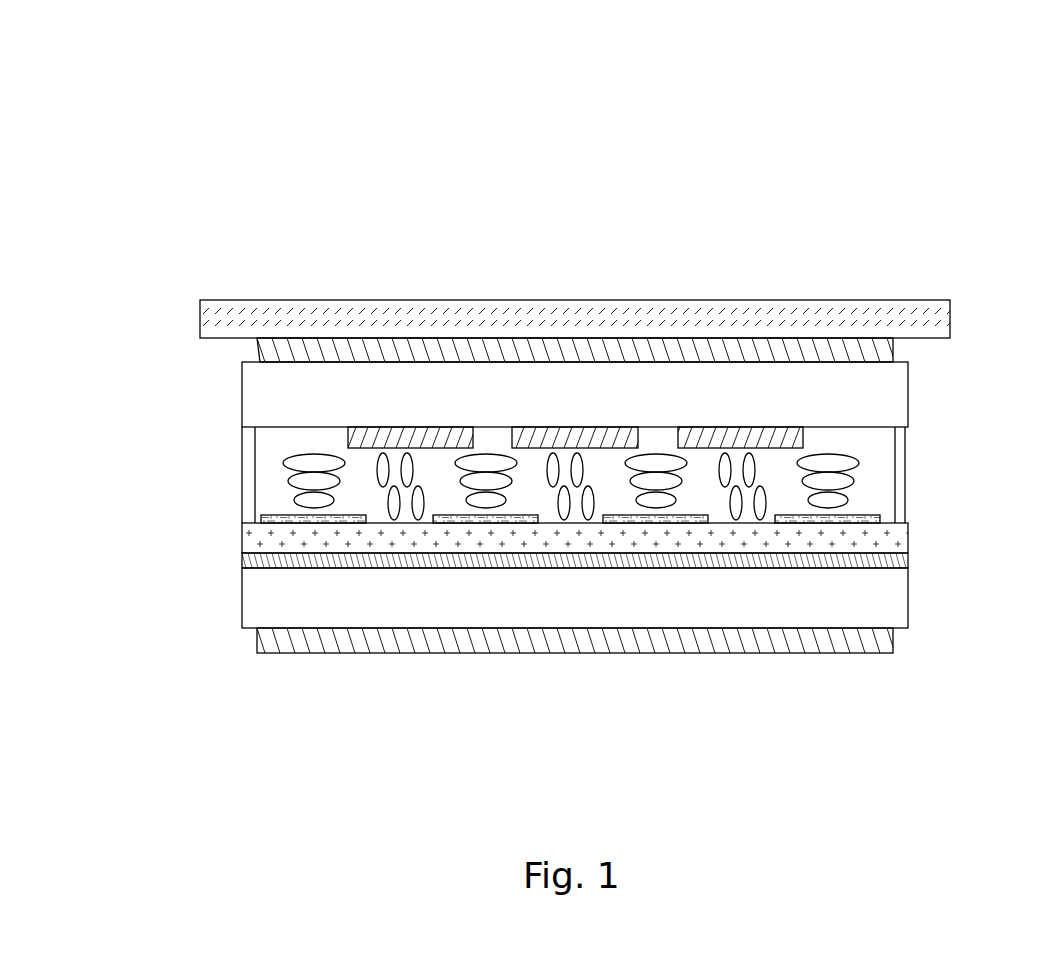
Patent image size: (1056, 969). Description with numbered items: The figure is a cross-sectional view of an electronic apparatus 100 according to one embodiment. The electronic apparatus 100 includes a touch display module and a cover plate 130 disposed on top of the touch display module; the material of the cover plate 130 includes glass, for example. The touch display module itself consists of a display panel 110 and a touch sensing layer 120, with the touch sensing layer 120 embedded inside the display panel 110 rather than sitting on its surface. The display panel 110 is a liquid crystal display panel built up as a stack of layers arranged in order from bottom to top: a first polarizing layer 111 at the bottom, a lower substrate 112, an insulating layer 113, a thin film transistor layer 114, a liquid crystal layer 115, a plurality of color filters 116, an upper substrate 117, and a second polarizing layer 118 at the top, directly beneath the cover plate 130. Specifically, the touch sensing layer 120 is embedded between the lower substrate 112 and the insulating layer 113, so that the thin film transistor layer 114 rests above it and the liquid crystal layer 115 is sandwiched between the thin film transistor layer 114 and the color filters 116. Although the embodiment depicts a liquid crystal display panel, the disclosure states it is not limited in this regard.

The electronic apparatus 100 is at (58, 52).
The display panel 110 is at (193, 468).
The first polarizing layer 111 is at (893, 643).
The lower substrate 112 is at (900, 600).
The insulating layer 113 is at (900, 542).
The thin film transistor layer 114 is at (880, 521).
The liquid crystal layer 115 is at (890, 478).
The color filters 116 is at (803, 437).
The upper substrate 117 is at (900, 397).
The second polarizing layer 118 is at (894, 353).
The touch sensing layer 120 is at (245, 560).
The cover plate 130 is at (951, 318).